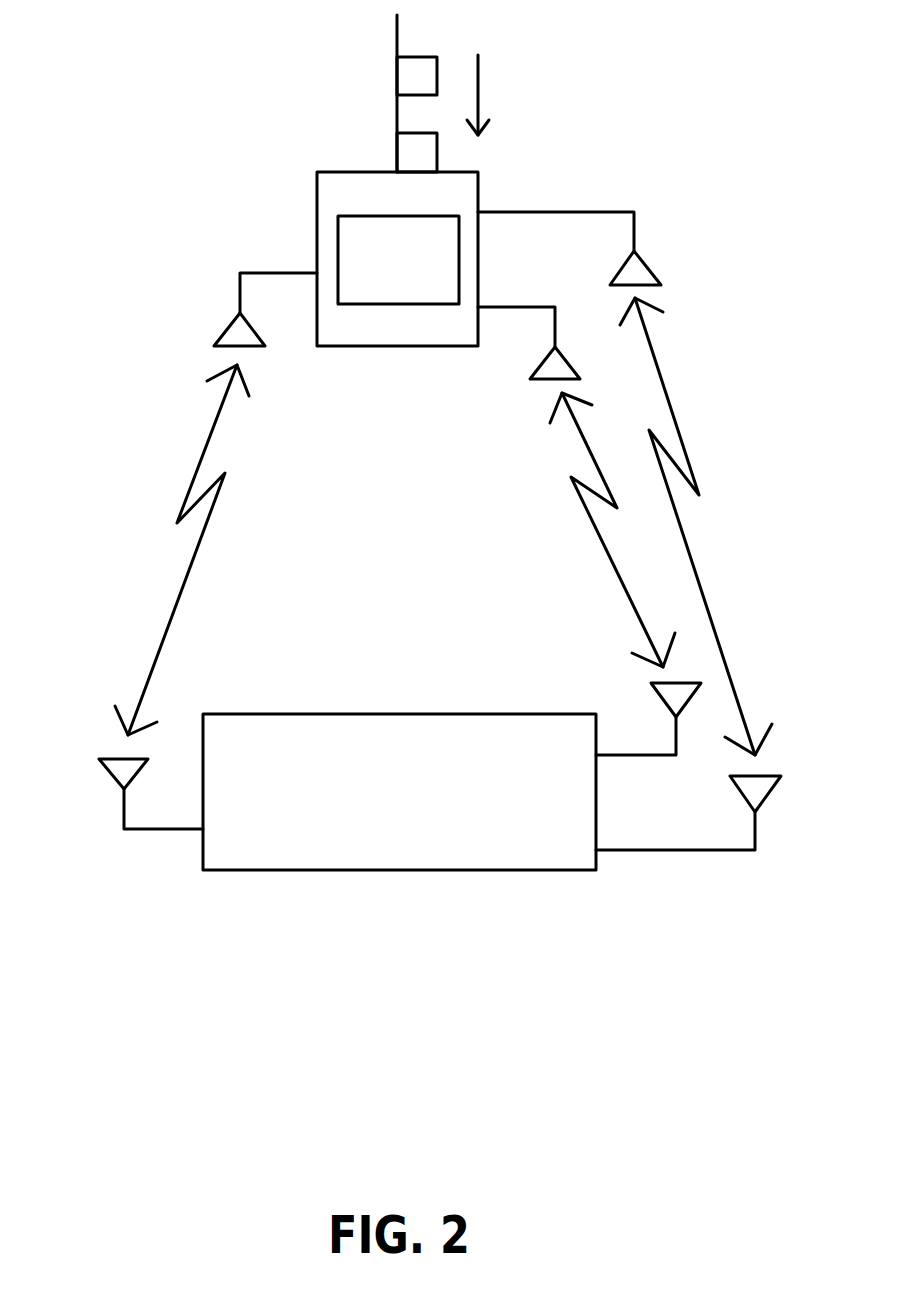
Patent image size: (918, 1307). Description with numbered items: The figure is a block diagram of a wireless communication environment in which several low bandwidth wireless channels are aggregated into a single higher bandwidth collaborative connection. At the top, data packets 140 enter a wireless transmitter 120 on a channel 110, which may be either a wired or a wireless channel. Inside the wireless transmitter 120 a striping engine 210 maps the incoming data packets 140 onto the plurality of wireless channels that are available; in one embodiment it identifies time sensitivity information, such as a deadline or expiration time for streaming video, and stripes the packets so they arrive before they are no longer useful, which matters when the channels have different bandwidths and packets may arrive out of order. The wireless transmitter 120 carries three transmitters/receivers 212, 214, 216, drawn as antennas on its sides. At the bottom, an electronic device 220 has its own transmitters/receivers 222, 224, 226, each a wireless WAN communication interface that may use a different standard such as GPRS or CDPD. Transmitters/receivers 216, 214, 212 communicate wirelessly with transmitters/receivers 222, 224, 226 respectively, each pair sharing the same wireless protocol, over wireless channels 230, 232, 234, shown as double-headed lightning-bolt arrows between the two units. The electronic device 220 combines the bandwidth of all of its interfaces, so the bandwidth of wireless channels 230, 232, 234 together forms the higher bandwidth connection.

The channel 110 is at (397, 108).
The data packets 140 is at (437, 75).
The wireless transmitter 120 is at (402, 346).
The striping engine 210 is at (414, 293).
The transmitter/receiver 212 is at (273, 273).
The transmitter/receiver 214 is at (603, 212).
The transmitter/receiver 216 is at (555, 318).
The electronic device 220 is at (420, 834).
The transmitter/receiver 222 is at (682, 683).
The transmitter/receiver 224 is at (768, 795).
The transmitter/receiver 226 is at (112, 778).
The wireless channel 230 is at (188, 588).
The wireless channel 232 is at (610, 557).
The wireless channel 234 is at (692, 548).